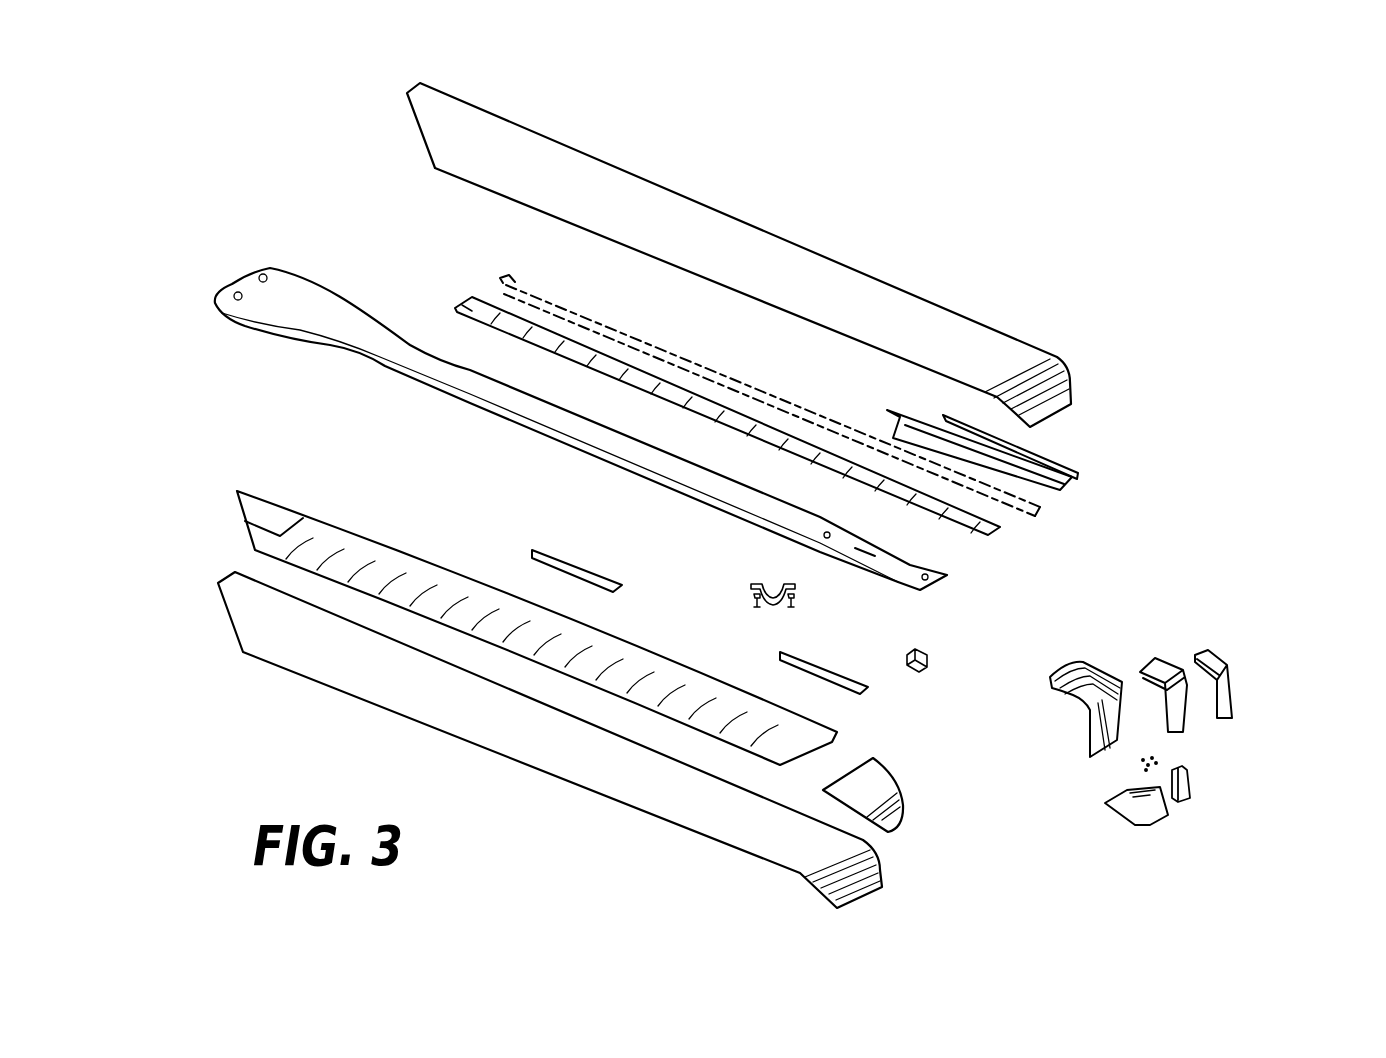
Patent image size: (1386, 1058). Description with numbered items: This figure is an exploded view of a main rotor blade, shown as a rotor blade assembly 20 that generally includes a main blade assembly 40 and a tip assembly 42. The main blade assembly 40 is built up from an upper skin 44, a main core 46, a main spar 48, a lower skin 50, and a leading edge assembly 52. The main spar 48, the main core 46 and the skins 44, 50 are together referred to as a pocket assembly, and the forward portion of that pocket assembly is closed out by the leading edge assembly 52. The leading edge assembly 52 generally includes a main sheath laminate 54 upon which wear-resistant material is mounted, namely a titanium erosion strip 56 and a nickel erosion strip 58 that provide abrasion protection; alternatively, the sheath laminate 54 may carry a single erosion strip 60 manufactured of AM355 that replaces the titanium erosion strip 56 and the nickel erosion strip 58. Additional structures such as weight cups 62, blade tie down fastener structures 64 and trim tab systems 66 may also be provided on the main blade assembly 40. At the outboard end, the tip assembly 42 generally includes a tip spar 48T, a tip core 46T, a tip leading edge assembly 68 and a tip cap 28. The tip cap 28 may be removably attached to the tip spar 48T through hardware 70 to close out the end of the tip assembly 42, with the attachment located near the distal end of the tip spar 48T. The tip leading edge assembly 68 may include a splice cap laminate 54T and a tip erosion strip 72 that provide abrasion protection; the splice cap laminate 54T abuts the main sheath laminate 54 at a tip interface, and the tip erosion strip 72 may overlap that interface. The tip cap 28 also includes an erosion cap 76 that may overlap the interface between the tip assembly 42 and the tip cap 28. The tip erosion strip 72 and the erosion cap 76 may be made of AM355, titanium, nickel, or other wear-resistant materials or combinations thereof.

The rotor blade assembly 20 is at (1070, 146).
The main blade assembly 40 is at (1263, 216).
The upper skin 44 is at (727, 225).
The main spar 48 is at (672, 485).
The main sheath laminate 54 is at (998, 540).
The single erosion strip 60 is at (1037, 512).
The titanium erosion strip 56 is at (1083, 498).
The nickel erosion strip 58 is at (1075, 470).
The leading edge assembly 52 is at (1118, 488).
The main core 46 is at (468, 592).
The tip core 46T is at (888, 780).
The lower skin 50 is at (260, 628).
The trim tab systems 66 is at (600, 583).
The blade tie down fastener structures 64 is at (797, 601).
The weight cups 62 is at (927, 655).
The tip spar 48T is at (1084, 755).
The splice cap laminate 54T is at (1142, 665).
The tip erosion strip 72 is at (1232, 688).
The hardware 70 is at (1160, 764).
The erosion cap 76 is at (1193, 790).
The tip cap 28 is at (1189, 805).
The tip leading edge assembly 68 is at (1246, 715).
The tip assembly 42 is at (1246, 748).